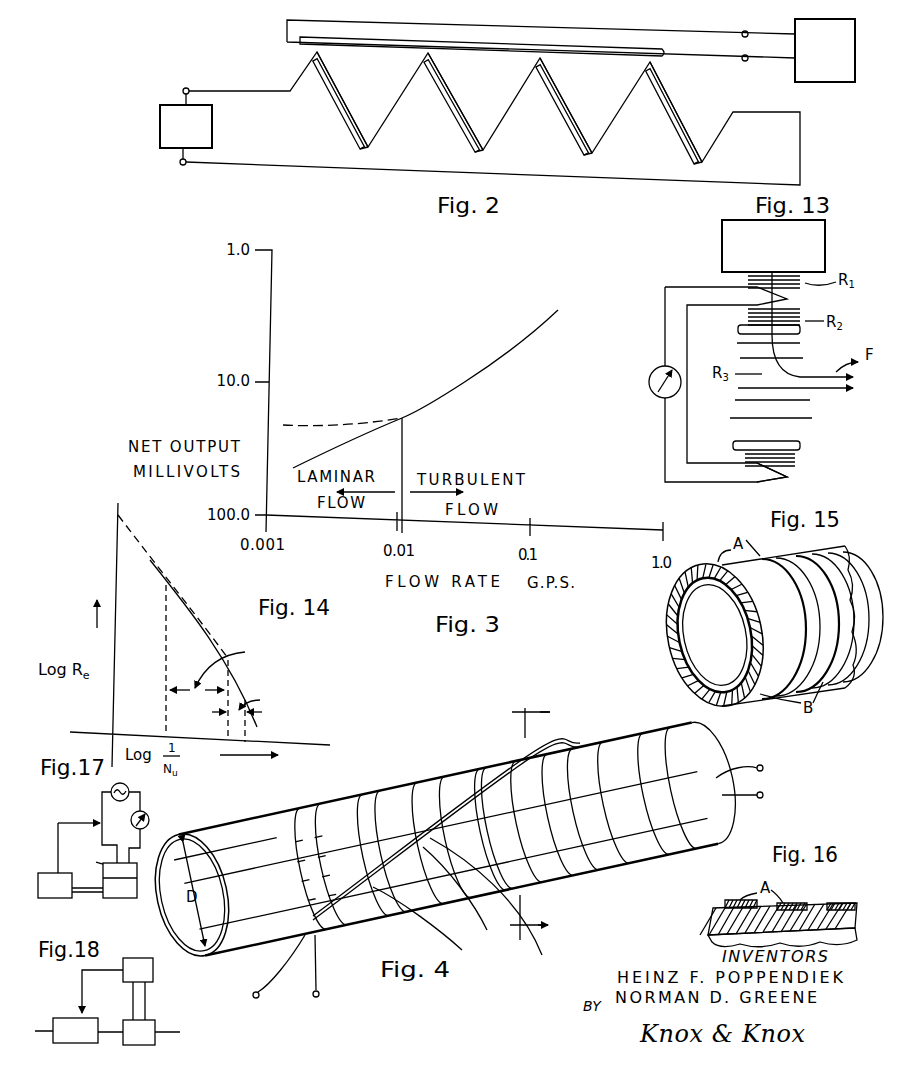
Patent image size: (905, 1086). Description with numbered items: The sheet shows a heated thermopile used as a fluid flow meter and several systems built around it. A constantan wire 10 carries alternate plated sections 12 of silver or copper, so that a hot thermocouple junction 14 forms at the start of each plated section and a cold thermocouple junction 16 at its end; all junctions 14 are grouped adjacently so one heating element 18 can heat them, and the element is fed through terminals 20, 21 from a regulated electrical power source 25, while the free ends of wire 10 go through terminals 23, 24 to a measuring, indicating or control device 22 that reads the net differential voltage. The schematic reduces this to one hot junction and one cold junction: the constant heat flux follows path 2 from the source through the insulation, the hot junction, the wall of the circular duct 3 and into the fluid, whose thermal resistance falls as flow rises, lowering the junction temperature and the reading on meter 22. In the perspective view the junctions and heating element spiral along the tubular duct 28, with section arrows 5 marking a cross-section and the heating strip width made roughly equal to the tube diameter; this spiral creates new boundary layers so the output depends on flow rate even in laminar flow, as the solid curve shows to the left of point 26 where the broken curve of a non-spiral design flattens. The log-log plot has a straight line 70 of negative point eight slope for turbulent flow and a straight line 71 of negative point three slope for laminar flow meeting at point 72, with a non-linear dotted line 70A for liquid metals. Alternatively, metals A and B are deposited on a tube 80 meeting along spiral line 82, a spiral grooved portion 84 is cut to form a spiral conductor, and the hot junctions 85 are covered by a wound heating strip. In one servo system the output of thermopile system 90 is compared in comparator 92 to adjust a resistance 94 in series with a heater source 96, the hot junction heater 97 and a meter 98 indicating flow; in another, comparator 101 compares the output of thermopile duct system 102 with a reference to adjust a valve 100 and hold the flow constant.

In FIG. 13, the heat flux path 2 is at (788, 360).
In FIG. 13, the circular duct 3 is at (800, 332).
In FIG. 4, the section line 5 is at (541, 821).
In FIG. 2, the wire 10 is at (248, 91).
In FIG. 4, the wire 10 is at (470, 905).
In FIG. 2, the plated sections 12 is at (342, 106).
In FIG. 4, the plated sections 12 is at (312, 858).
In FIG. 2, the thermocouple junction 14 is at (322, 58).
In FIG. 13, the thermocouple junction 14 is at (787, 299).
In FIG. 4, the thermocouple junction 14 is at (322, 893).
In FIG. 2, the thermocouple junction 16 is at (362, 139).
In FIG. 13, the thermocouple junction 16 is at (785, 478).
In FIG. 4, the thermocouple junction 16 is at (660, 838).
In FIG. 2, the heating element 18 is at (505, 45).
In FIG. 13, the heating element 18 is at (826, 242).
In FIG. 4, the heating element 18 is at (470, 795).
In FIG. 2, the terminal 20 is at (749, 28).
In FIG. 4, the terminal 20 is at (253, 997).
In FIG. 2, the terminal 21 is at (745, 62).
In FIG. 4, the terminal 21 is at (763, 797).
In FIG. 2, the measuring, indicating or control device 22 is at (160, 118).
In FIG. 13, the measuring, indicating or control device 22 is at (655, 370).
In FIG. 2, the terminal 23 is at (184, 88).
In FIG. 4, the terminal 23 is at (314, 997).
In FIG. 2, the terminal 24 is at (181, 165).
In FIG. 4, the terminal 24 is at (763, 767).
In FIG. 2, the regulated electrical power source 25 is at (833, 79).
In FIG. 3, the point 26 is at (402, 418).
In FIG. 4, the tubular duct 28 is at (237, 826).
In FIG. 14, the straight line 70 is at (187, 612).
In FIG. 14, the non-linear dotted line 70A is at (190, 594).
In FIG. 14, the straight line 71 is at (250, 697).
In FIG. 14, the point 72 is at (230, 668).
In FIG. 15, the tube 80 is at (684, 623).
In FIG. 16, the tube 80 is at (713, 917).
In FIG. 15, the spiral line 82 is at (840, 596).
In FIG. 15, the spiral grooved portion 84 is at (803, 575).
In FIG. 16, the spiral grooved portion 84 is at (820, 903).
In FIG. 15, the hot junctions 85 is at (827, 595).
In FIG. 17, the thermopile system 90 is at (120, 899).
In FIG. 17, the comparator 92 is at (55, 899).
In FIG. 17, the resistance 94 is at (95, 818).
In FIG. 17, the heater source 96 is at (130, 789).
In FIG. 17, the hot junction heater 97 is at (103, 864).
In FIG. 17, the meter 98 is at (150, 819).
In FIG. 18, the valve 100 is at (70, 1017).
In FIG. 18, the comparator 101 is at (134, 958).
In FIG. 18, the thermopile duct system 102 is at (150, 1019).